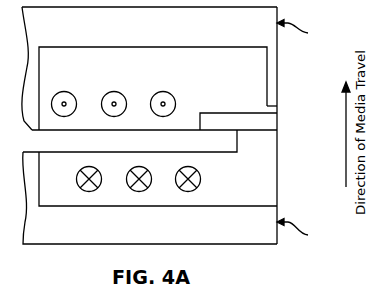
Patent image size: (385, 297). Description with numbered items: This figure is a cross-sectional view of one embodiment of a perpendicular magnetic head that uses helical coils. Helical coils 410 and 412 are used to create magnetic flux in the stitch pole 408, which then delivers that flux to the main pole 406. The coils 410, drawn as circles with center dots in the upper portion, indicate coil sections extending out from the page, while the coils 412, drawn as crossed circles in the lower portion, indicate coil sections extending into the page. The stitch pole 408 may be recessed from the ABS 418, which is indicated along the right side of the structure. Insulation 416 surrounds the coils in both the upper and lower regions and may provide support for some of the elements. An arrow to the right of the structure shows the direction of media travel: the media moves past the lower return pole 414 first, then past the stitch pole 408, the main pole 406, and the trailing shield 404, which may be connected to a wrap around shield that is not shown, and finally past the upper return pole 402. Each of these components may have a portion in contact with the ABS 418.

The upper return pole 402 is at (210, 36).
The trailing shield 404 is at (277, 80).
The main pole 406 is at (277, 118).
The stitch pole 408 is at (170, 150).
The helical coils 410 is at (66, 92).
The helical coils 412 is at (77, 183).
The lower return pole 414 is at (173, 232).
The insulation 416 is at (213, 86).
The ABS 418 is at (306, 125).